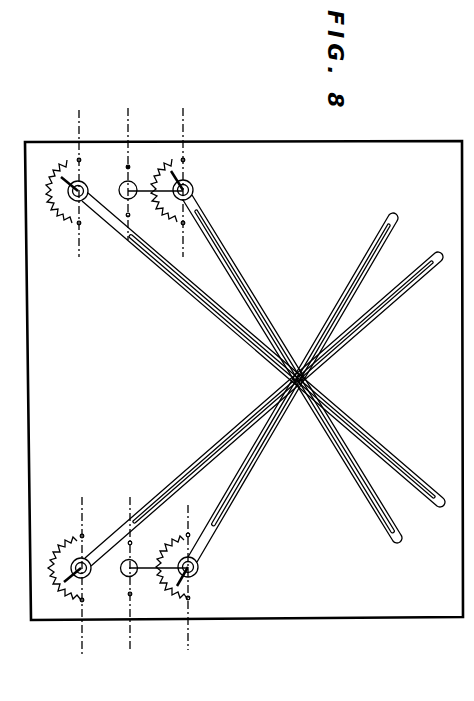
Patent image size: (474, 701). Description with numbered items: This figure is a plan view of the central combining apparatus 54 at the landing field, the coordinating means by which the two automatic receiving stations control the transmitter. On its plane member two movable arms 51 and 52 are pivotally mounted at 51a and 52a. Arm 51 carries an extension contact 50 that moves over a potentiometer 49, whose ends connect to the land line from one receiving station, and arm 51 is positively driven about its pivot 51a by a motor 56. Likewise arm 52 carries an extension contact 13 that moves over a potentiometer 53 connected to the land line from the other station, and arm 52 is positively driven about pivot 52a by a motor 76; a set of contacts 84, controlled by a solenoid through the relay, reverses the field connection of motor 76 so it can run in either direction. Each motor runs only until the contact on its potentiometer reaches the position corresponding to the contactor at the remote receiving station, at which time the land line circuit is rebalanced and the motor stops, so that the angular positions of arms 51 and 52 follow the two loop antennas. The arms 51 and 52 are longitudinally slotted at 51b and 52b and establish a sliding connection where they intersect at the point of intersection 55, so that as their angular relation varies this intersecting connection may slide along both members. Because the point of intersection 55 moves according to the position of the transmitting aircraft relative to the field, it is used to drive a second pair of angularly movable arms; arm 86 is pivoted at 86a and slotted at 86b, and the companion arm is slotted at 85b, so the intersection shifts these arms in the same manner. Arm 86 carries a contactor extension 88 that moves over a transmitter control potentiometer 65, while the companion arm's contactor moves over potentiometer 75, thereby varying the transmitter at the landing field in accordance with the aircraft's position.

The central combining apparatus 54 is at (427, 597).
The potentiometer 75 is at (50, 182).
The set of contacts 84 is at (76, 183).
The motor 76 is at (125, 185).
The potentiometer 53 is at (170, 173).
The extension contact 13 is at (190, 170).
The slot 85b is at (217, 310).
The movable arm 52 is at (220, 233).
The pivot 52a is at (192, 188).
The slot 52b is at (258, 303).
The angularly movable arm 86 is at (177, 476).
The pivot 86a is at (77, 547).
The slot 86b is at (213, 450).
The movable arm 51 is at (233, 502).
The pivot 51a is at (200, 582).
The slot 51b is at (268, 432).
The point of intersection 55 is at (305, 380).
The potentiometer 65 is at (62, 563).
The contactor extension 88 is at (78, 590).
The motor 56 is at (127, 560).
The potentiometer 49 is at (165, 585).
The extension contact 50 is at (187, 592).